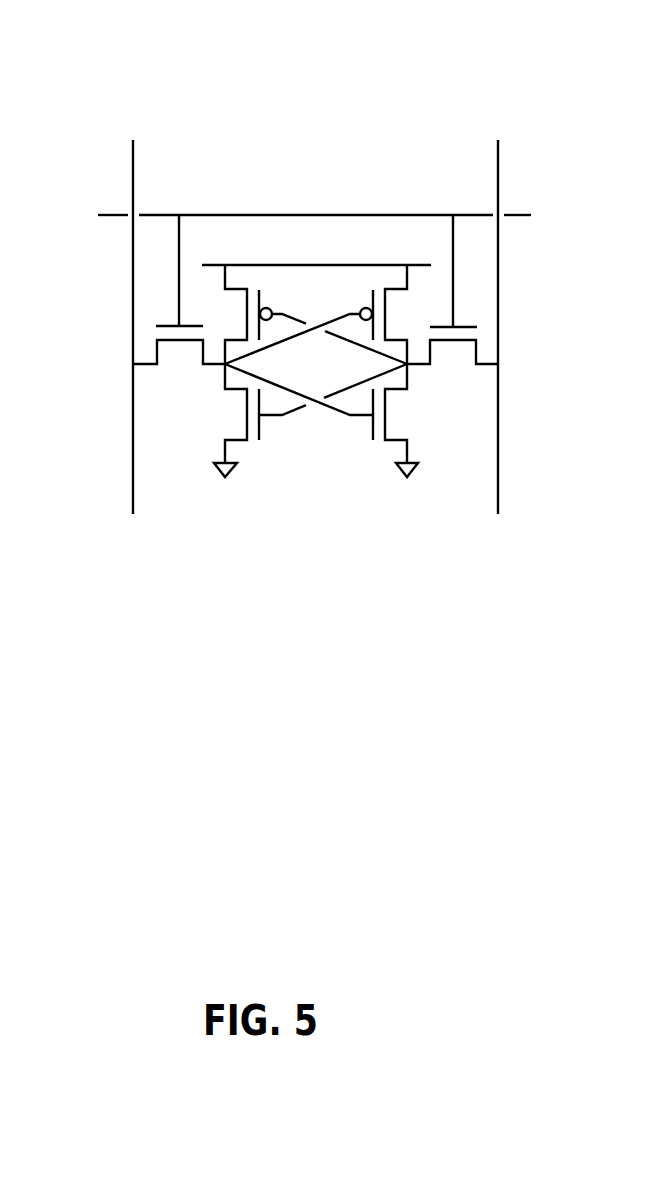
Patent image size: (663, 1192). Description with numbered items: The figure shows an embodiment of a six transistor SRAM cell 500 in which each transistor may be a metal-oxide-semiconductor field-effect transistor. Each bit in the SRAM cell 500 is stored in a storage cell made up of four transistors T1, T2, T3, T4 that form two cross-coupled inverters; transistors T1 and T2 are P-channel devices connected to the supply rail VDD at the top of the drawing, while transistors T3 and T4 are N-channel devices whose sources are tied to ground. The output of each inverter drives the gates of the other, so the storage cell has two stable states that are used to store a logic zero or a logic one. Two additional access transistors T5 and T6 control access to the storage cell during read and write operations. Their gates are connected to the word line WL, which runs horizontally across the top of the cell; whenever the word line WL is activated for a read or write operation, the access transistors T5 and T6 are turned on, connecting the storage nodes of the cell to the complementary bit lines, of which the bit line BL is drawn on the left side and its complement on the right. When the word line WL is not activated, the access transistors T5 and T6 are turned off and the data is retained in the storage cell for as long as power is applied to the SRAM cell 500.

The six transistor (6T) SRAM cell 500 is at (321, 269).
The transistor T1 is at (308, 314).
The transistor T2 is at (326, 314).
The transistor T3 is at (302, 420).
The transistor T4 is at (327, 420).
The access transistor T5 is at (179, 289).
The access transistor T6 is at (452, 289).
The bit line BL is at (134, 308).
The word line WL is at (278, 215).
The supply voltage VDD is at (316, 255).